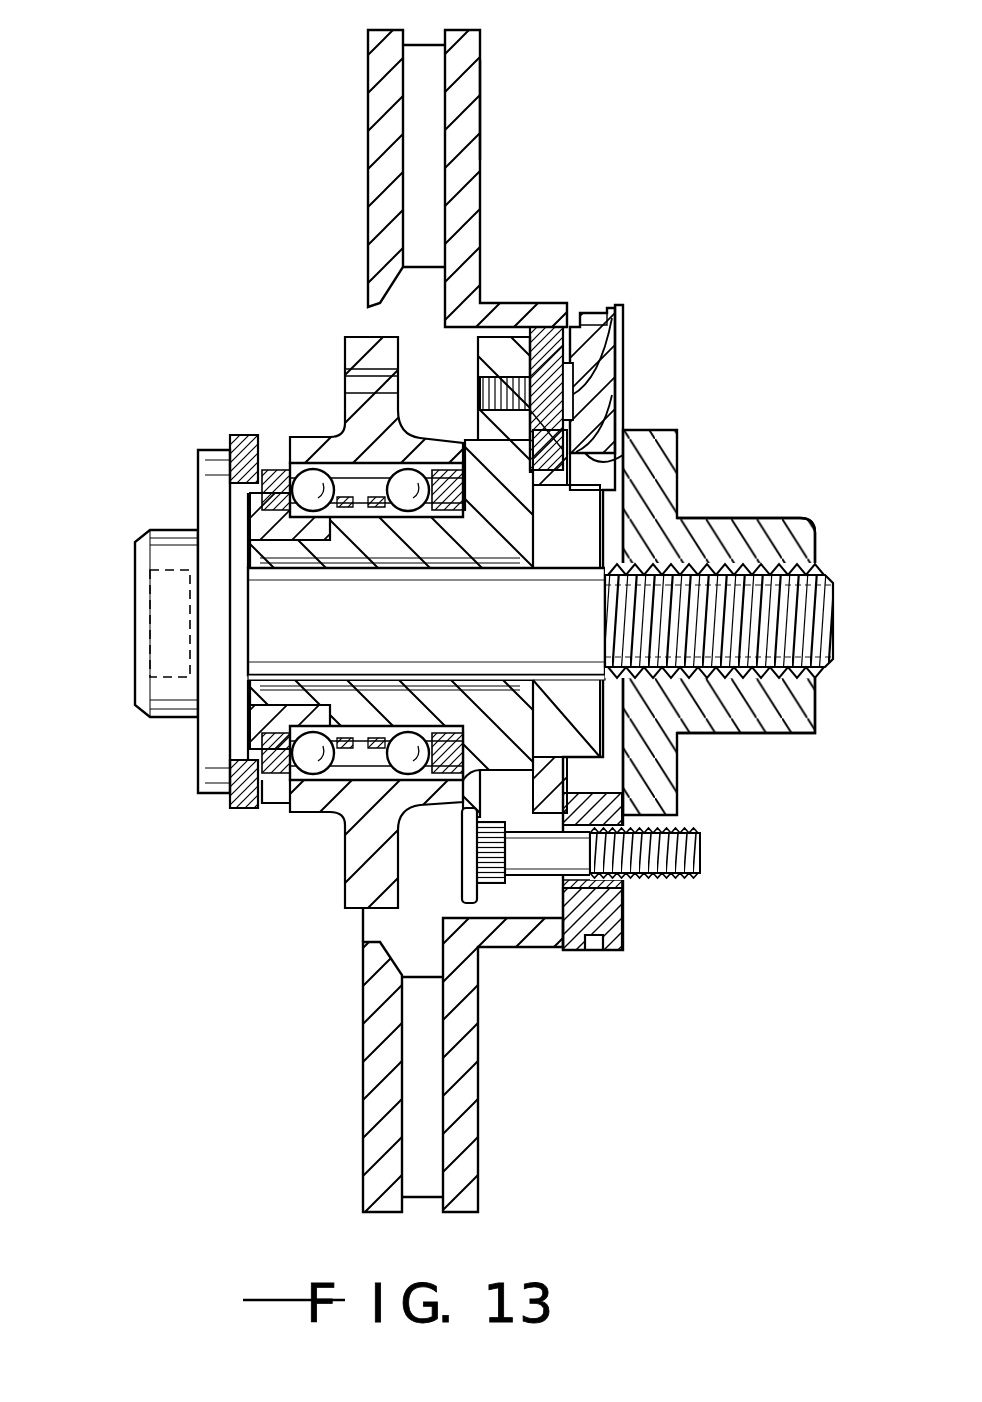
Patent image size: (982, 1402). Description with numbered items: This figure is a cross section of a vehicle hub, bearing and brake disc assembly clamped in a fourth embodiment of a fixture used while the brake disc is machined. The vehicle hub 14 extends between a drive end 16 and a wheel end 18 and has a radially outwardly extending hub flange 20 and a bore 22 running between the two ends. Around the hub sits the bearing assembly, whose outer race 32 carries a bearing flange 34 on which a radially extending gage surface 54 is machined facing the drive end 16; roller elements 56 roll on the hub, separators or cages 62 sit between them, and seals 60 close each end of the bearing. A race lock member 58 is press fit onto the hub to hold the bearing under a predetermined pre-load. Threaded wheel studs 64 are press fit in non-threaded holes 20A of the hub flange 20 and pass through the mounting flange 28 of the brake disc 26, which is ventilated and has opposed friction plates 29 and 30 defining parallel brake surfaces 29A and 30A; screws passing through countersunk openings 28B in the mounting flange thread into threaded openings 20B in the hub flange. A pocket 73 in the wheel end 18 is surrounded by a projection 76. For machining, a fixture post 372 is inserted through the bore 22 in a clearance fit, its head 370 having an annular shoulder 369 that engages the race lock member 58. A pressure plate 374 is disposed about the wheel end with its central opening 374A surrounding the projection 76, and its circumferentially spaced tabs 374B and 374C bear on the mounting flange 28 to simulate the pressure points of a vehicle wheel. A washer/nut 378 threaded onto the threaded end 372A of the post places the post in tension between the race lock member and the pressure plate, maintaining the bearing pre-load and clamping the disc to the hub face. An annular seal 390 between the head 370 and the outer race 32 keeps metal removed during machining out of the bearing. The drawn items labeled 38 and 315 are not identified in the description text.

The vehicle hub 14 is at (382, 692).
The drive end 16 is at (255, 552).
The wheel end 18 is at (605, 558).
The hub flange 20 is at (505, 326).
The non-threaded holes 20A is at (512, 935).
The threaded openings 20B is at (478, 410).
The bore 22 is at (330, 676).
The brake disc 26 is at (480, 1075).
The mounting flange 28 is at (586, 302).
The non-threaded countersunk openings 28B is at (612, 918).
The friction plate 29 is at (385, 216).
The brake surface 29A is at (368, 150).
The friction plate 30 is at (465, 205).
The brake surface 30A is at (482, 110).
The outer race 32 is at (338, 792).
The bearing flange 34 is at (342, 850).
The upper hub 38 is at (345, 370).
The gage surface 54 is at (342, 882).
The roller elements 56 is at (410, 488).
The race lock member 58 is at (240, 765).
The seals 60 is at (284, 470).
The separators or cages 62 is at (330, 672).
The threaded wheel studs 64 is at (470, 815).
The pocket 73 is at (535, 710).
The projection 76 is at (598, 745).
The nut body 315 is at (628, 885).
The annular shoulder 369 is at (246, 592).
The head 370 is at (200, 472).
The fixture post 372 is at (600, 545).
The threaded end 372A is at (833, 590).
The pressure plate 374 is at (640, 350).
The central opening 374A is at (632, 440).
The tabs 374B is at (640, 395).
The tabs 374C is at (610, 310).
The washer/nut 378 is at (742, 728).
The annular seal 390 is at (240, 435).